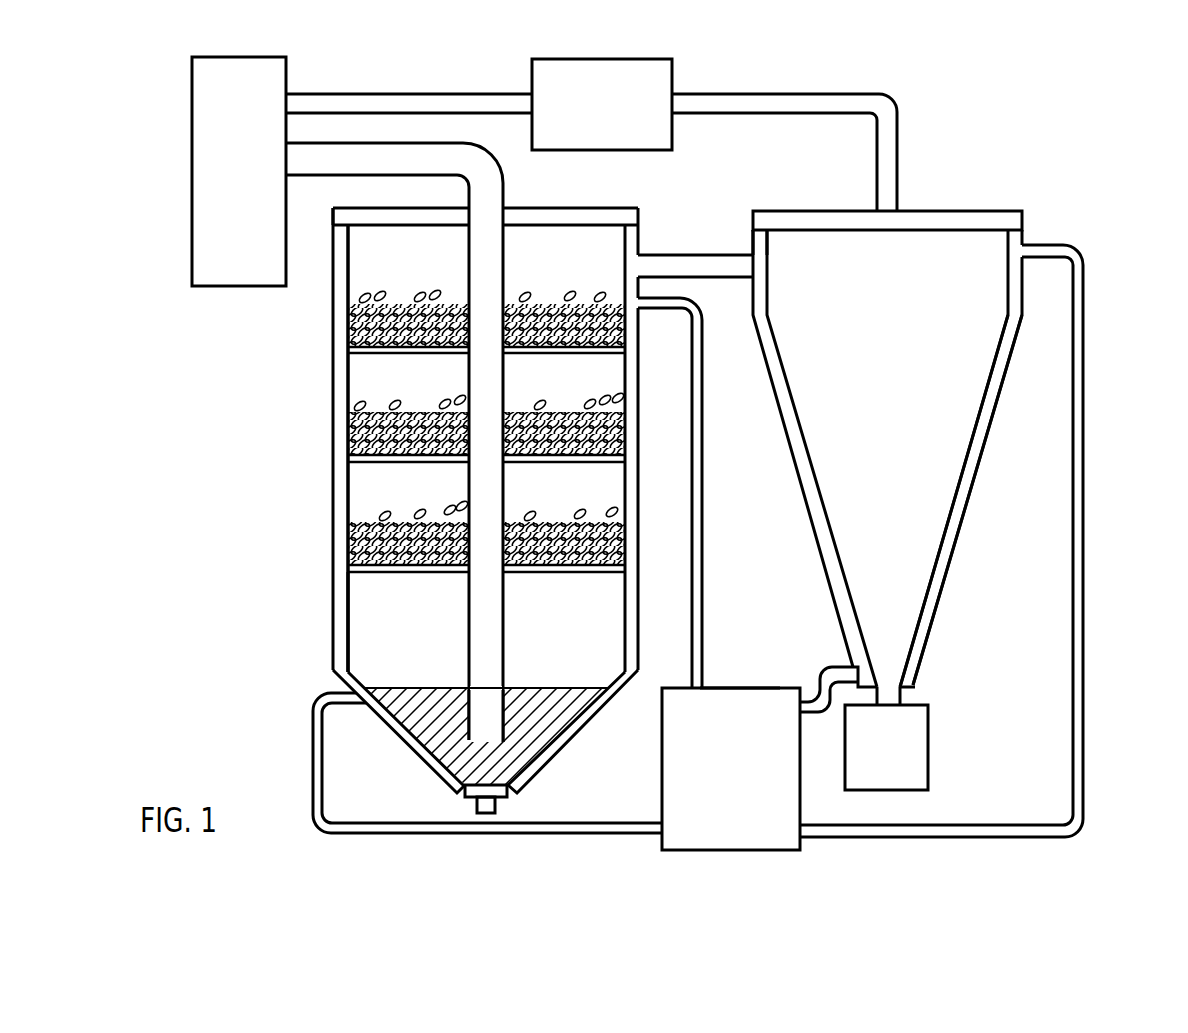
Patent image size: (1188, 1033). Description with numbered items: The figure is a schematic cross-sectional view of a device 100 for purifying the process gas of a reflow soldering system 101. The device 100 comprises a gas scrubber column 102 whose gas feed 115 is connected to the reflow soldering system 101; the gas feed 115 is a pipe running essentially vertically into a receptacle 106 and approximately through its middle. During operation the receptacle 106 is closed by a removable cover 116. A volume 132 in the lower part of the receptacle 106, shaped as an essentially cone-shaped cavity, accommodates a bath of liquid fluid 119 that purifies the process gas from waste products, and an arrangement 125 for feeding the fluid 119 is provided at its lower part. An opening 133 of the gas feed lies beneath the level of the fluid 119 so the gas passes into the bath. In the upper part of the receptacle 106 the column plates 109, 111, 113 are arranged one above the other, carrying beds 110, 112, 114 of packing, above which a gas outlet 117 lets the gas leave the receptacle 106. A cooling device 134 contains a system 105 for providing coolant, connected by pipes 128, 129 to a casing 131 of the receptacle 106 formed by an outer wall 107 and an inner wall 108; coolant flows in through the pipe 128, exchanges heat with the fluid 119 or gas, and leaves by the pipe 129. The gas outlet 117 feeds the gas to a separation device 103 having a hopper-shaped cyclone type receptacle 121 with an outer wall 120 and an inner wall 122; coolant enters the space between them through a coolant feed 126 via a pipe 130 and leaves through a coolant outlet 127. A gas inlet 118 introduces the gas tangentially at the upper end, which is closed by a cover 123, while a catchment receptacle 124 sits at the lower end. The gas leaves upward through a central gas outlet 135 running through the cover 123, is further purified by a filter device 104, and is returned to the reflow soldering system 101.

The device 100 is at (1122, 104).
The reflow soldering system 101 is at (213, 287).
The gas scrubber column 102 is at (316, 383).
The separation device 103 is at (1044, 205).
The filter device 104 is at (672, 74).
The system for the provision of a coolant 105 is at (662, 768).
The receptacle 106 is at (326, 444).
The outer wall 107 is at (333, 520).
The inner wall 108 is at (347, 588).
The column plate 109 is at (564, 572).
The bed of packing 110 is at (548, 531).
The column plate 111 is at (381, 463).
The bed of packing 112 is at (412, 420).
The column plate 113 is at (541, 353).
The bed of packing 114 is at (568, 300).
The gas feed 115 is at (503, 183).
The cover 116 is at (589, 208).
The gas outlet 117 is at (661, 253).
The gas inlet 118 is at (773, 253).
The liquid fluid 119 is at (412, 686).
The outer wall 120 is at (994, 407).
The cyclone type receptacle 121 is at (990, 454).
The inner wall 122 is at (960, 492).
The cover 123 is at (976, 210).
The catchment receptacle 124 is at (928, 772).
The arrangement for feeding the fluid 125 is at (507, 800).
The coolant feed 126 is at (1058, 242).
The coolant outlet 127 is at (824, 666).
The pipe 128 is at (702, 432).
The pipe 129 is at (312, 712).
The pipe 130 is at (1083, 770).
The casing 131 is at (334, 481).
The volume 132 is at (569, 680).
The opening 133 is at (506, 706).
The cooling device 134 is at (738, 676).
The gas outlet 135 is at (890, 217).